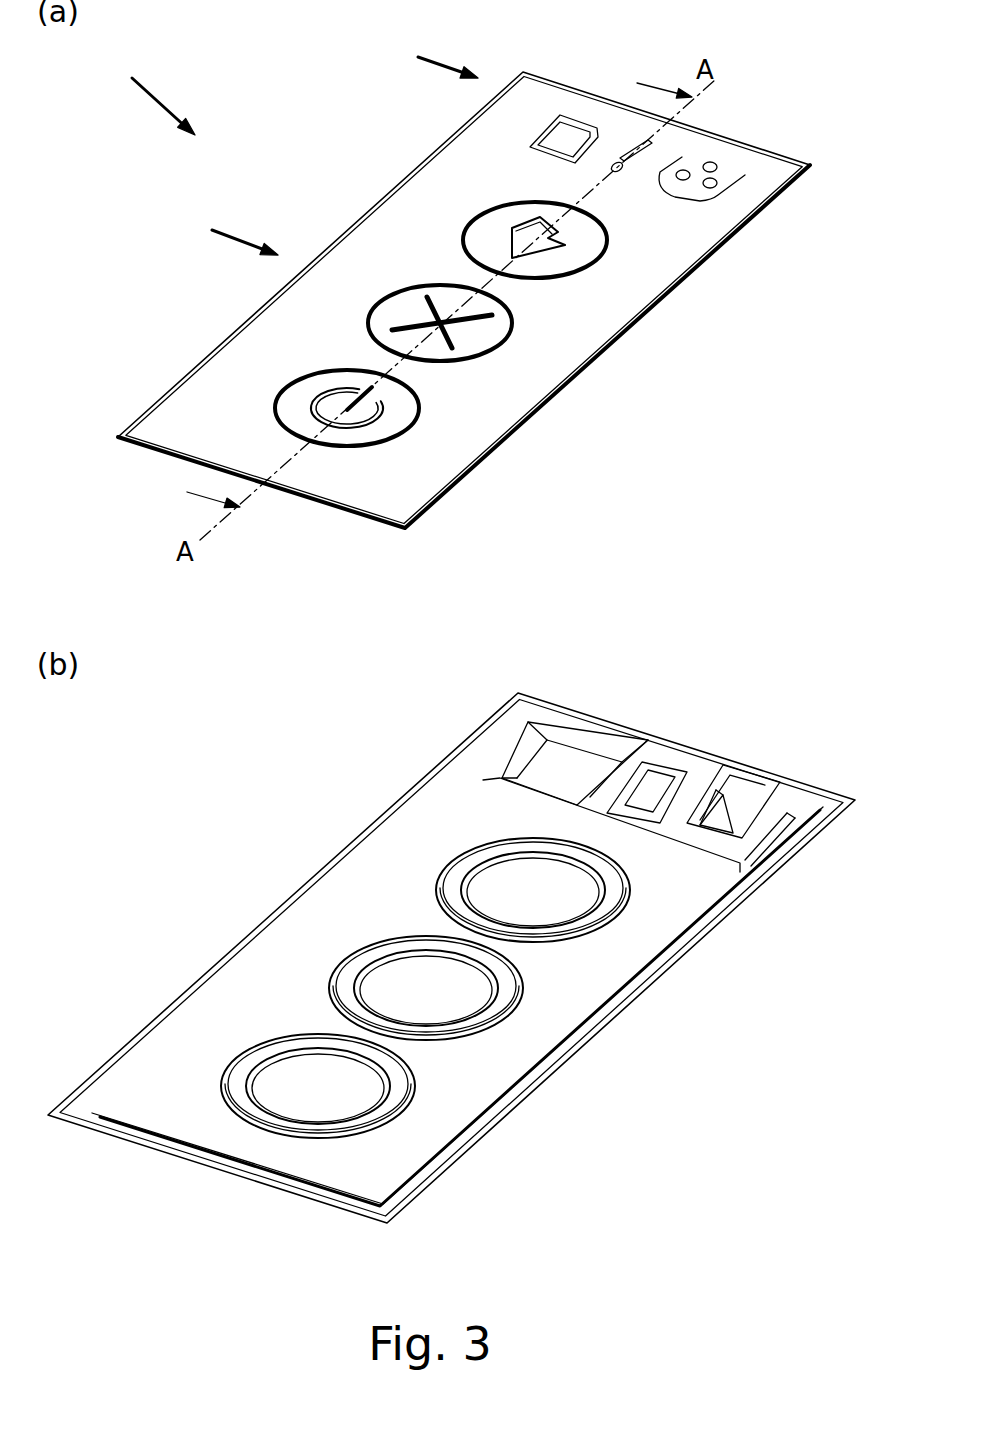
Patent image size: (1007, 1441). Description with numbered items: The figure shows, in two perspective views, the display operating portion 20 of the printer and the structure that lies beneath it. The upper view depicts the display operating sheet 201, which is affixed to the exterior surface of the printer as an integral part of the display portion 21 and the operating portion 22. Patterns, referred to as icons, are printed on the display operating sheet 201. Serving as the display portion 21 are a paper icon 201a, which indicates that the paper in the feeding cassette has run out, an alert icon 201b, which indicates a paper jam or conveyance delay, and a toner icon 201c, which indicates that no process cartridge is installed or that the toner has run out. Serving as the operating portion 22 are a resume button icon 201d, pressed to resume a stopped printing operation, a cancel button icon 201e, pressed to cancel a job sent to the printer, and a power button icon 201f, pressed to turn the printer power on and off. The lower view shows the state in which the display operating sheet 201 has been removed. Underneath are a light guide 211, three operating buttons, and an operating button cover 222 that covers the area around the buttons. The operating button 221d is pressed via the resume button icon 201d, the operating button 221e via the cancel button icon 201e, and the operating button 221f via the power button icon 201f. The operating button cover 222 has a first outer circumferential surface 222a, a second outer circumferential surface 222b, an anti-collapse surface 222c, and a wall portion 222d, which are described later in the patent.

The display operating portion 20 is at (147, 89).
The display portion 21 is at (423, 55).
The operating portion 22 is at (224, 230).
The display operating sheet 201 is at (253, 432).
The paper icon 201a is at (563, 133).
The alert icon 201b is at (623, 157).
The toner icon 201c is at (730, 163).
The resume button icon 201d is at (577, 250).
The cancel button icon 201e is at (483, 338).
The power button icon 201f is at (365, 432).
The light guide 211 is at (730, 800).
The operating button 221d is at (553, 897).
The operating button 221e is at (433, 992).
The operating button 221f is at (318, 1092).
The operating button cover 222 is at (543, 1026).
The first outer circumferential surface 222a is at (630, 887).
The second outer circumferential surface 222b is at (547, 830).
The anti-collapse surface 222c is at (470, 868).
The wall portion 222d is at (498, 852).